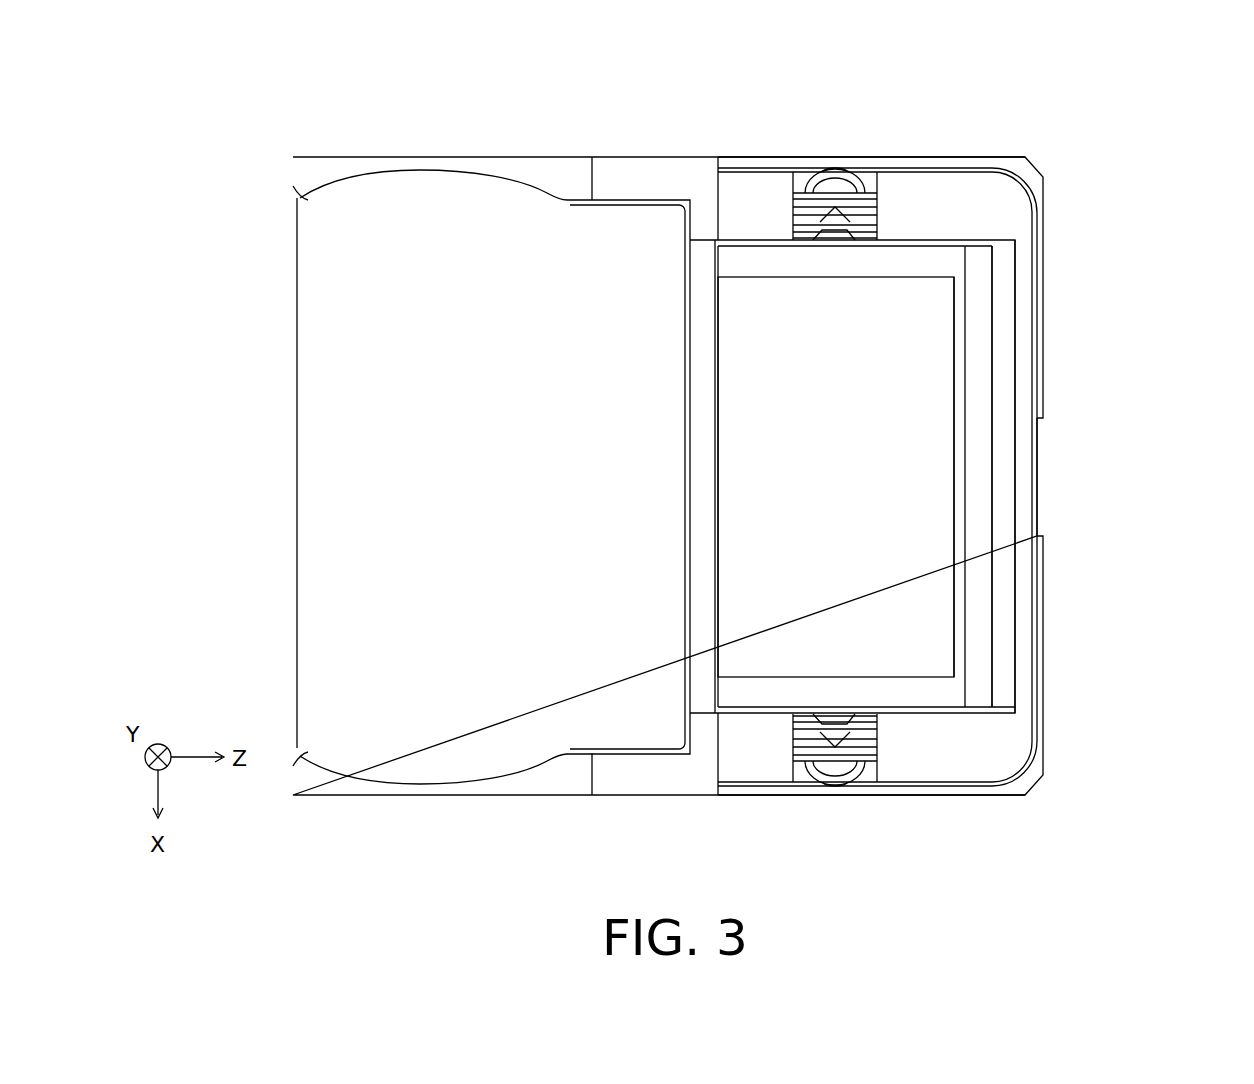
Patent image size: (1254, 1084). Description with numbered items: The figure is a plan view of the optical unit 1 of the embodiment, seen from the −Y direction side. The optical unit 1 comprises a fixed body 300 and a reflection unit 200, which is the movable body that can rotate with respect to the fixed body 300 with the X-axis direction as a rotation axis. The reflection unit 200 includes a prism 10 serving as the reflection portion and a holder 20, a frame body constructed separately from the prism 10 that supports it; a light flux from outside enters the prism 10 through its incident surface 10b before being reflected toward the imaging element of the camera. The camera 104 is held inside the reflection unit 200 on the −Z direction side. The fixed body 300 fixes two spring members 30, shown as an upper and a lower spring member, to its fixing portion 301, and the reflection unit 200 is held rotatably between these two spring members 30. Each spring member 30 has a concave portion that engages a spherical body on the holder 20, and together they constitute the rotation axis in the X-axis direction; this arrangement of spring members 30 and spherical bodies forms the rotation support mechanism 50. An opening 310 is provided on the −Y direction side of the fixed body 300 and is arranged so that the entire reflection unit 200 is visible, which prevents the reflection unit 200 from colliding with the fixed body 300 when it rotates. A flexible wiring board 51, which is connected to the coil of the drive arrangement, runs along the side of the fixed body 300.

The optical unit 1 is at (1125, 155).
The prism 10 is at (913, 397).
The incident surface 10b is at (917, 307).
The holder 20 is at (980, 557).
The spring member 30 is at (900, 815).
The rotation support mechanism 50 is at (808, 156).
The flexible wiring board 51 is at (1042, 498).
The camera 104 is at (648, 202).
The reflection unit 200 is at (995, 320).
The fixed body 300 is at (570, 157).
The fixing portion 301 is at (823, 172).
The opening 310 is at (1003, 365).